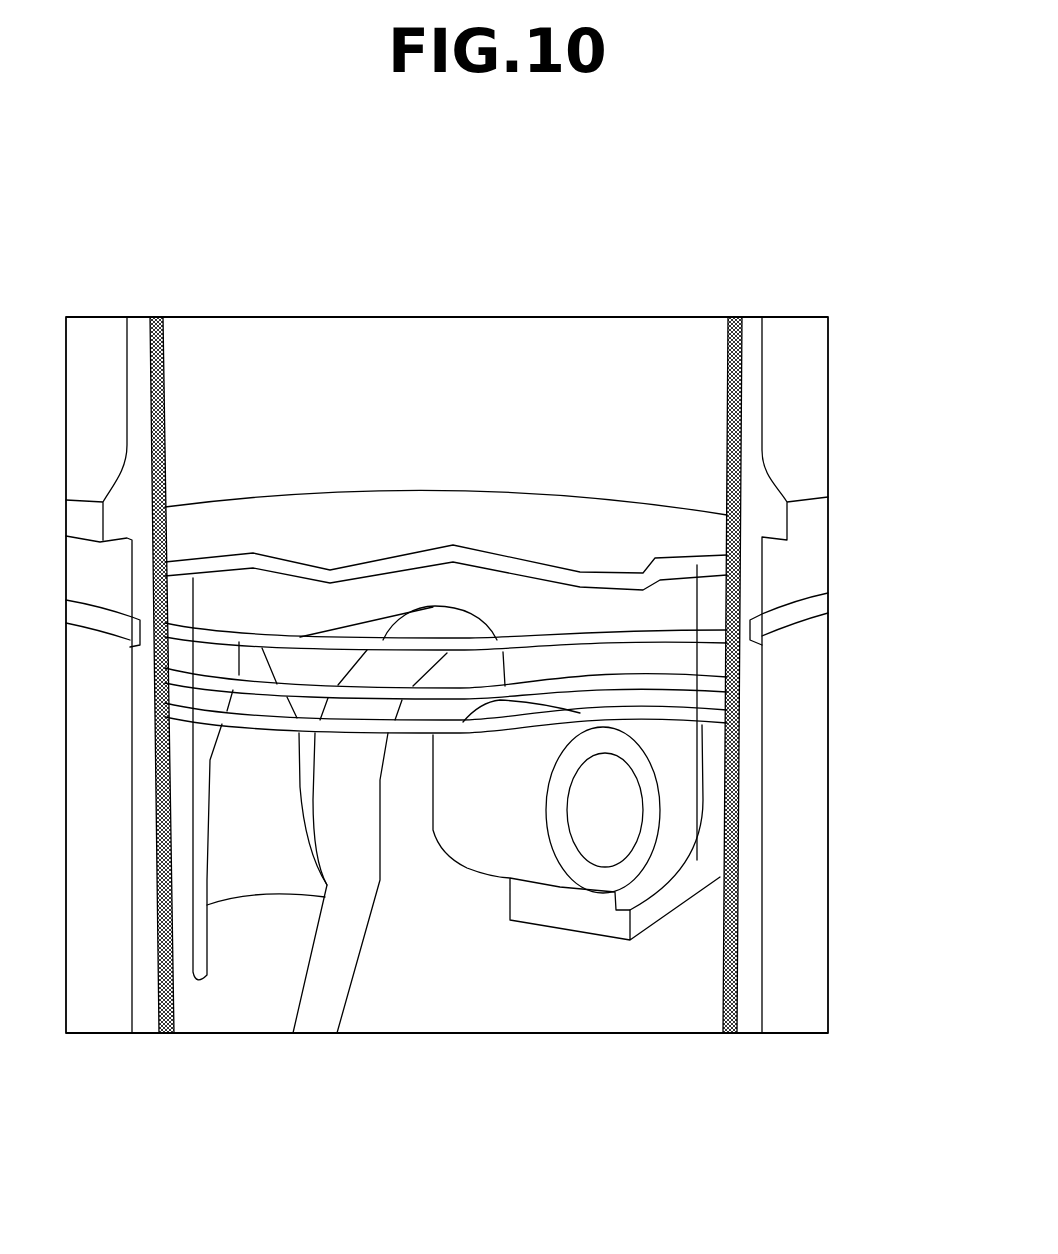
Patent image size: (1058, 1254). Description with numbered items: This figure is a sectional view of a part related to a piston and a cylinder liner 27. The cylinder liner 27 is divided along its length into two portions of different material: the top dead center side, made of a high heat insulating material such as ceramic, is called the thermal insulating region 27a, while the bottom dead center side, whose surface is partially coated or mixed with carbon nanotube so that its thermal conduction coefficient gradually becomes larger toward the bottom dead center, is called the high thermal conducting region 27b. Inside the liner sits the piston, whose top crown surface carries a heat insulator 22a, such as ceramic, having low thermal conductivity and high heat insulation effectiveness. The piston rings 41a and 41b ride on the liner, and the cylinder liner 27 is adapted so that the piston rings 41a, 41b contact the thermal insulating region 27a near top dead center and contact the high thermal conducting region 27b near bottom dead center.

The cylinder liner 27 is at (742, 350).
The thermal insulating region 27a is at (723, 403).
The high thermal conducting region 27b is at (720, 947).
The heat insulator 22a is at (647, 578).
The piston ring 41a is at (663, 630).
The piston ring 41b is at (705, 668).